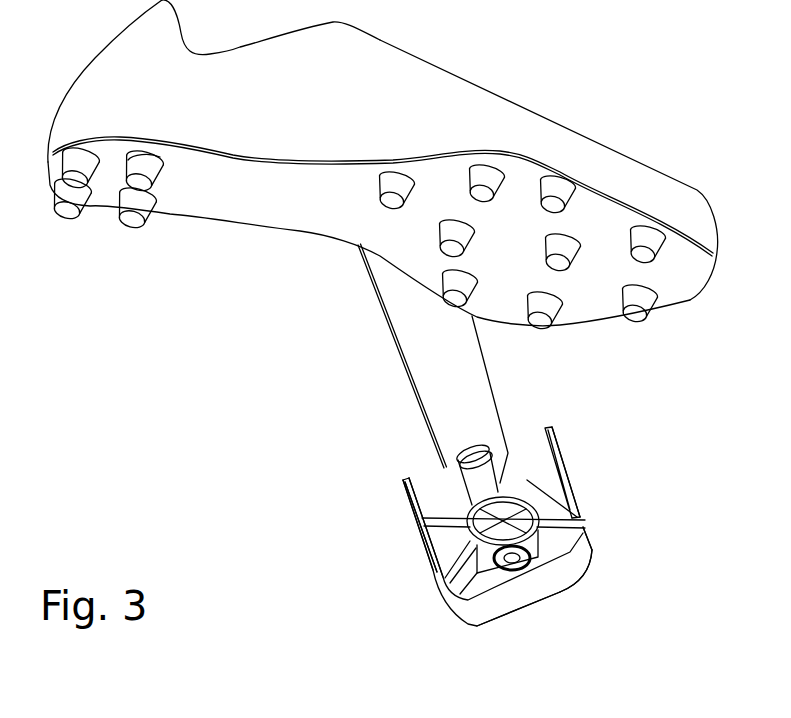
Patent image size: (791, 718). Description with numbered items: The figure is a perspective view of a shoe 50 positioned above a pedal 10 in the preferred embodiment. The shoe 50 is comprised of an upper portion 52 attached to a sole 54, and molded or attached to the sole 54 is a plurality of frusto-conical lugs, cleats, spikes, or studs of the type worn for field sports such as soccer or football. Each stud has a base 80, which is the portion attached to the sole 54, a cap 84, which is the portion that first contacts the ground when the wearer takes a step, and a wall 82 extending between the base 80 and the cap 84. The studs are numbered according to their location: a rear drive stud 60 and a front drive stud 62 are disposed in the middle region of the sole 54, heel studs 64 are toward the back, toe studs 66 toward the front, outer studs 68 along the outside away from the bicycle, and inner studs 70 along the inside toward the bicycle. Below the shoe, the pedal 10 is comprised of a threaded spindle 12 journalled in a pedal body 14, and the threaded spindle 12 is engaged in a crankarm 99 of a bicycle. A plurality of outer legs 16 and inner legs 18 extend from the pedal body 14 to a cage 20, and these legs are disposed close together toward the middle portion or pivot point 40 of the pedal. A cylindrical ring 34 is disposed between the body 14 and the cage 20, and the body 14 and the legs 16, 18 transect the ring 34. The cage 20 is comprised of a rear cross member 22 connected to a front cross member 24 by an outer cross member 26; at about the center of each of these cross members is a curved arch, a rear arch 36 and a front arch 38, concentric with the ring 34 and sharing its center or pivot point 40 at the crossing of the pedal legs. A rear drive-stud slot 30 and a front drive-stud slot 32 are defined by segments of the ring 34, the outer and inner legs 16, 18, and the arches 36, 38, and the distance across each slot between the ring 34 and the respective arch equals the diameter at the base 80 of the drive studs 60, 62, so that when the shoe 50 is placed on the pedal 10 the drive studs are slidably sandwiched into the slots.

The pedal 10 is at (501, 525).
The threaded spindle 12 is at (436, 439).
The pedal body 14 is at (496, 439).
The outer legs 16 is at (585, 512).
The inner legs 18 is at (438, 507).
The cage 20 is at (583, 568).
The rear cross member 22 is at (422, 521).
The front cross member 24 is at (580, 513).
The outer cross member 26 is at (530, 588).
The rear drive-stud slot 30 is at (447, 553).
The front drive-stud slot 32 is at (562, 497).
The cylindrical ring 34 is at (550, 468).
The rear arch 36 is at (425, 548).
The front arch 38 is at (580, 495).
The pivot point 40 is at (505, 503).
The shoe 50 is at (432, 46).
The upper portion 52 is at (313, 78).
The sole 54 is at (302, 195).
The rear drive stud 60 is at (450, 247).
The front drive stud 62 is at (550, 263).
The heel studs 64 is at (72, 177).
The toe studs 66 is at (627, 320).
The outer studs 68 is at (390, 197).
The inner studs 70 is at (533, 320).
The base 80 is at (164, 162).
The wall 82 is at (147, 167).
The cap 84 is at (162, 208).
The crankarm 99 is at (365, 320).